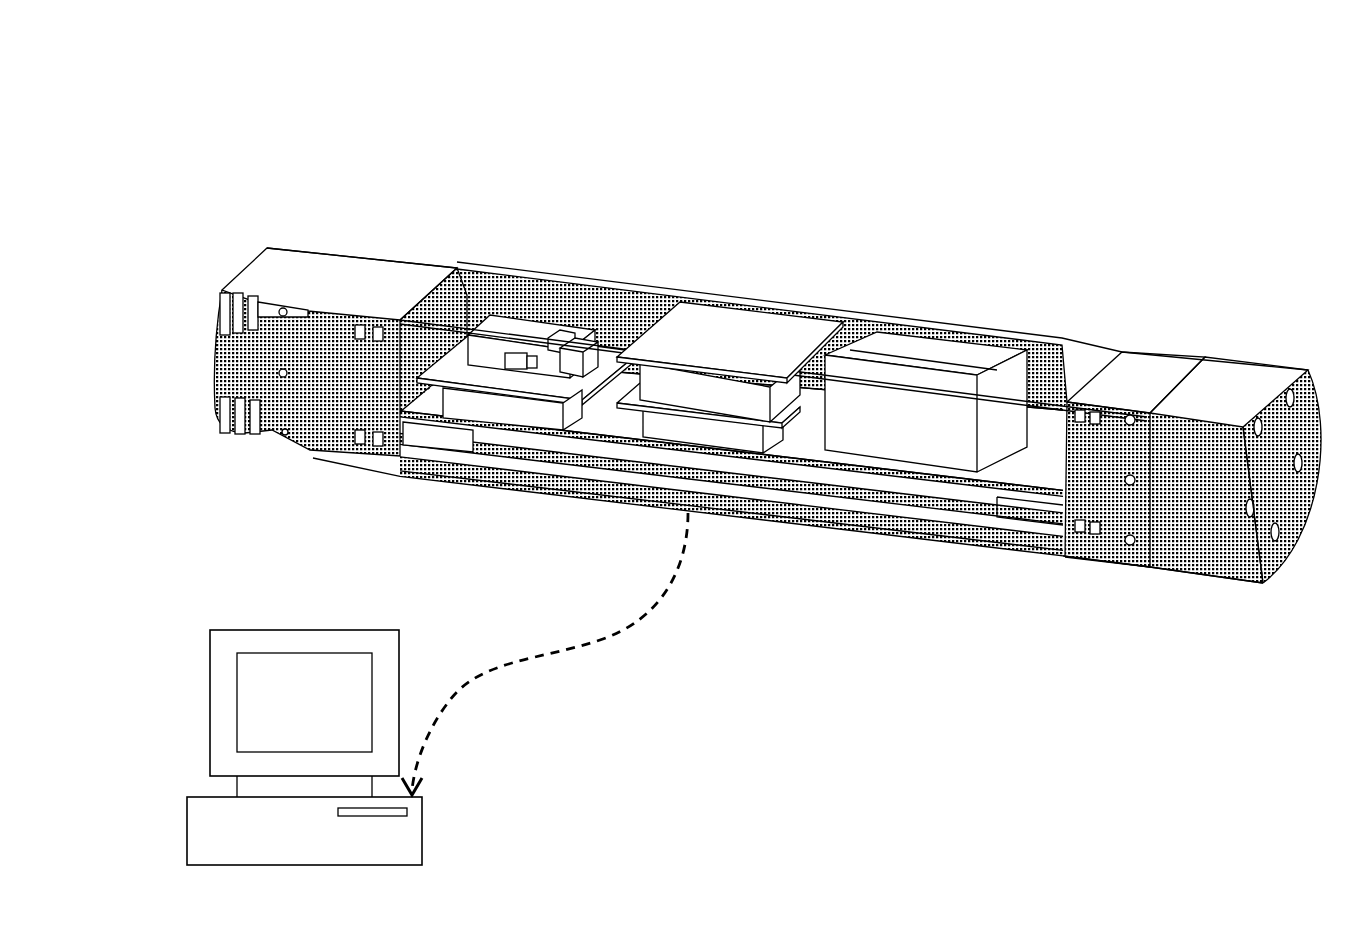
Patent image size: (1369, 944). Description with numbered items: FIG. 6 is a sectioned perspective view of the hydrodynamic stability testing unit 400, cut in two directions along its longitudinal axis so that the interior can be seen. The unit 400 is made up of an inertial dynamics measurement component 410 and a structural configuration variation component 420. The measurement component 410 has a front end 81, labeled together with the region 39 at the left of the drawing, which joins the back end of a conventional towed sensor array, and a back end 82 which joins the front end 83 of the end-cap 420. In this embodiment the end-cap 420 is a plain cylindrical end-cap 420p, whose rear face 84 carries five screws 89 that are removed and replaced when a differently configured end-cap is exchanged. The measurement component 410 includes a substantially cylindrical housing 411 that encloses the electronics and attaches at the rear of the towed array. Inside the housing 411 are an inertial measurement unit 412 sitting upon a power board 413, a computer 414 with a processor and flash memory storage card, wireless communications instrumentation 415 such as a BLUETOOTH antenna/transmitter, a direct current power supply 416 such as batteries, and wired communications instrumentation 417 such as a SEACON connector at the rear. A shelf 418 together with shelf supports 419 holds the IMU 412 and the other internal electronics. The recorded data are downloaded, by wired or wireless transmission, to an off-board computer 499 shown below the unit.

The hydrodynamic stability testing unit 400 is at (988, 157).
The end cap 39 is at (302, 265).
The front end 81 is at (355, 483).
The back end 82 is at (1165, 582).
The front end 83 is at (1107, 562).
The end face 84 is at (1277, 578).
The screws 89 is at (1290, 395).
The inertial dynamics measurement component 410 is at (852, 532).
The housing 411 is at (731, 483).
The inertial measurement unit 412 is at (515, 322).
The power board 413 is at (606, 343).
The computer 414 is at (716, 413).
The wireless communications instrumentation 415 is at (755, 330).
The direct current power supply 416 is at (893, 367).
The wired communications instrumentation 417 is at (1147, 435).
The shelf 418 is at (600, 420).
The shelf supports 419 is at (1042, 508).
The structural configuration variation component 420 is at (1243, 382).
The plain cylindrical end-cap 420p is at (1229, 392).
The off-board computer 499 is at (288, 711).